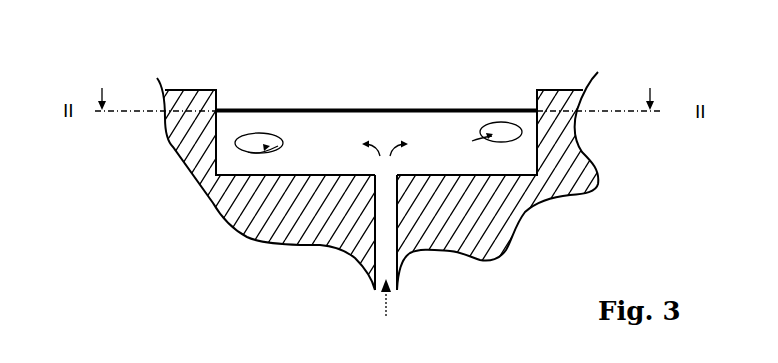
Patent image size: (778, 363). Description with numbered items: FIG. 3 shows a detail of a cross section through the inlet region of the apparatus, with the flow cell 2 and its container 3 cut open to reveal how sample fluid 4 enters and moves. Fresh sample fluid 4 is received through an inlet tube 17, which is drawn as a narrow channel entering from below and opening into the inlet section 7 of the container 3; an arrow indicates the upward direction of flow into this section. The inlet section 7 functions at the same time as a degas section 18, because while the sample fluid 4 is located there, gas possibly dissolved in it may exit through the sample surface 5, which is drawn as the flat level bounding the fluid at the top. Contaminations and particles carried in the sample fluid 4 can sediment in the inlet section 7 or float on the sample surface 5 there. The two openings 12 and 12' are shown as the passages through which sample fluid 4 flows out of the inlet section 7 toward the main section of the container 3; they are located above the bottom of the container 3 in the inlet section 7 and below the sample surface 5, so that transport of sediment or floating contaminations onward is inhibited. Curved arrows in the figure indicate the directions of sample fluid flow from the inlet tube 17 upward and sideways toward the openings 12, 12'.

The inlet section 7 is at (349, 152).
The degas section 18 is at (260, 73).
The flow cell 2 is at (349, 181).
The container 3 is at (192, 138).
The sample fluid 4 is at (317, 123).
The sample surface 5 is at (440, 109).
The opening 12 is at (192, 179).
The opening 12' is at (549, 174).
The inlet tube 17 is at (397, 223).